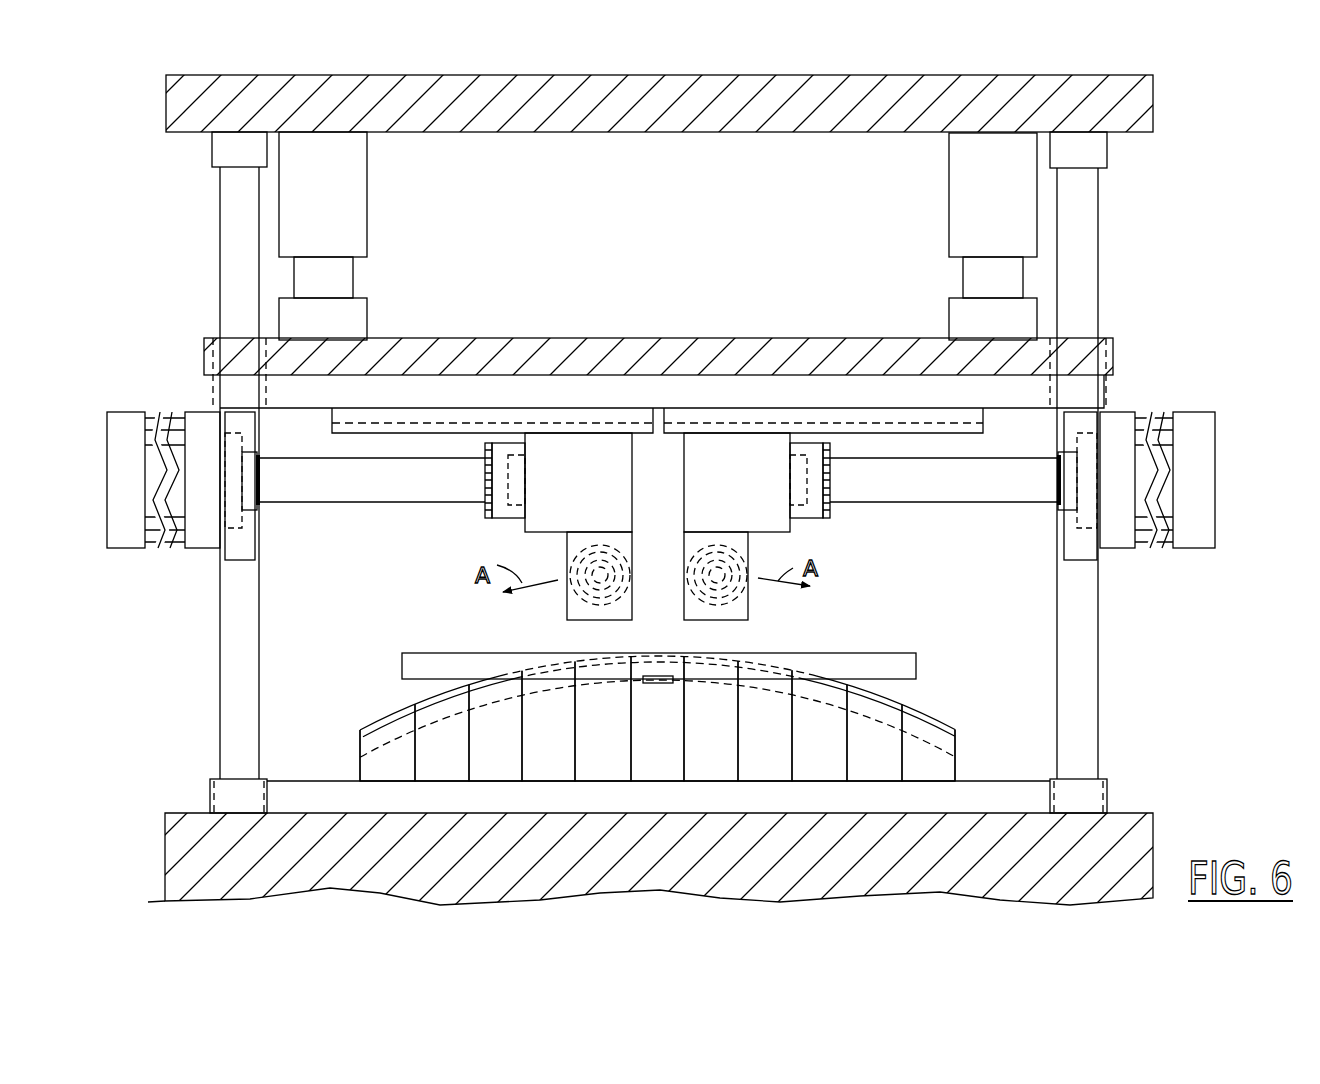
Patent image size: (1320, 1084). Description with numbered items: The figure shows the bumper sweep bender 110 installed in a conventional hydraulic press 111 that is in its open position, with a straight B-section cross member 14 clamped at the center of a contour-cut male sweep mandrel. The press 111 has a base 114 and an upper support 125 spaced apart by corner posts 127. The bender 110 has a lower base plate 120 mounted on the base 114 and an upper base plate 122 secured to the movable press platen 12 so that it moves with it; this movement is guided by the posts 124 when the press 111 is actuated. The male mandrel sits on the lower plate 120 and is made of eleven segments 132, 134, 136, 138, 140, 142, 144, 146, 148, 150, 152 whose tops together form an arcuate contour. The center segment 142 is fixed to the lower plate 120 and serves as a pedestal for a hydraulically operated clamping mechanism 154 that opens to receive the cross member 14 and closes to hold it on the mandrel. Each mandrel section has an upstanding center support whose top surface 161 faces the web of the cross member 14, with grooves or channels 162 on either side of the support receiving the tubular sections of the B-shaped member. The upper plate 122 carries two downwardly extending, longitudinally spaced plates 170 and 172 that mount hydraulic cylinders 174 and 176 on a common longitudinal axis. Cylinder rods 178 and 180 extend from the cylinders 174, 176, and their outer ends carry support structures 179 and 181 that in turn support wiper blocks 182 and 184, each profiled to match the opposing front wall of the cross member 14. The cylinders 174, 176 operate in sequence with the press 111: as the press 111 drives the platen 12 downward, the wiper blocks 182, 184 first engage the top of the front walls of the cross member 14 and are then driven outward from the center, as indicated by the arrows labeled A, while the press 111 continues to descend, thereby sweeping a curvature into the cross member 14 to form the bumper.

The upper support 125 is at (1143, 100).
The hydraulic press 111 is at (1168, 152).
The corner posts 127 is at (224, 224).
The posts 124 is at (348, 272).
The movable platen 12 is at (823, 340).
The upper base plate 122 is at (268, 393).
The hydraulic cylinder 174 is at (130, 545).
The hydraulic cylinder 176 is at (1160, 420).
The plate 170 is at (237, 556).
The plate 172 is at (1083, 553).
The cylinder rod 178 is at (336, 492).
The cylinder rod 180 is at (950, 493).
The support structure 179 is at (535, 528).
The support structure 181 is at (810, 525).
The wiper block 182 is at (570, 613).
The wiper block 184 is at (760, 617).
The clamping mechanism 154 is at (656, 676).
The cross member 14 is at (895, 657).
The top surface 161 is at (393, 712).
The grooves or channels 162 is at (378, 745).
The bender 110 is at (350, 762).
The segment 132 is at (372, 771).
The segment 134 is at (426, 771).
The segment 136 is at (480, 771).
The segment 138 is at (533, 771).
The segment 140 is at (587, 771).
The center segment 142 is at (642, 771).
The segment 144 is at (695, 771).
The segment 146 is at (749, 771).
The segment 148 is at (804, 771).
The segment 150 is at (858, 771).
The segment 152 is at (912, 777).
The lower base plate 120 is at (1007, 781).
The base 114 is at (188, 812).